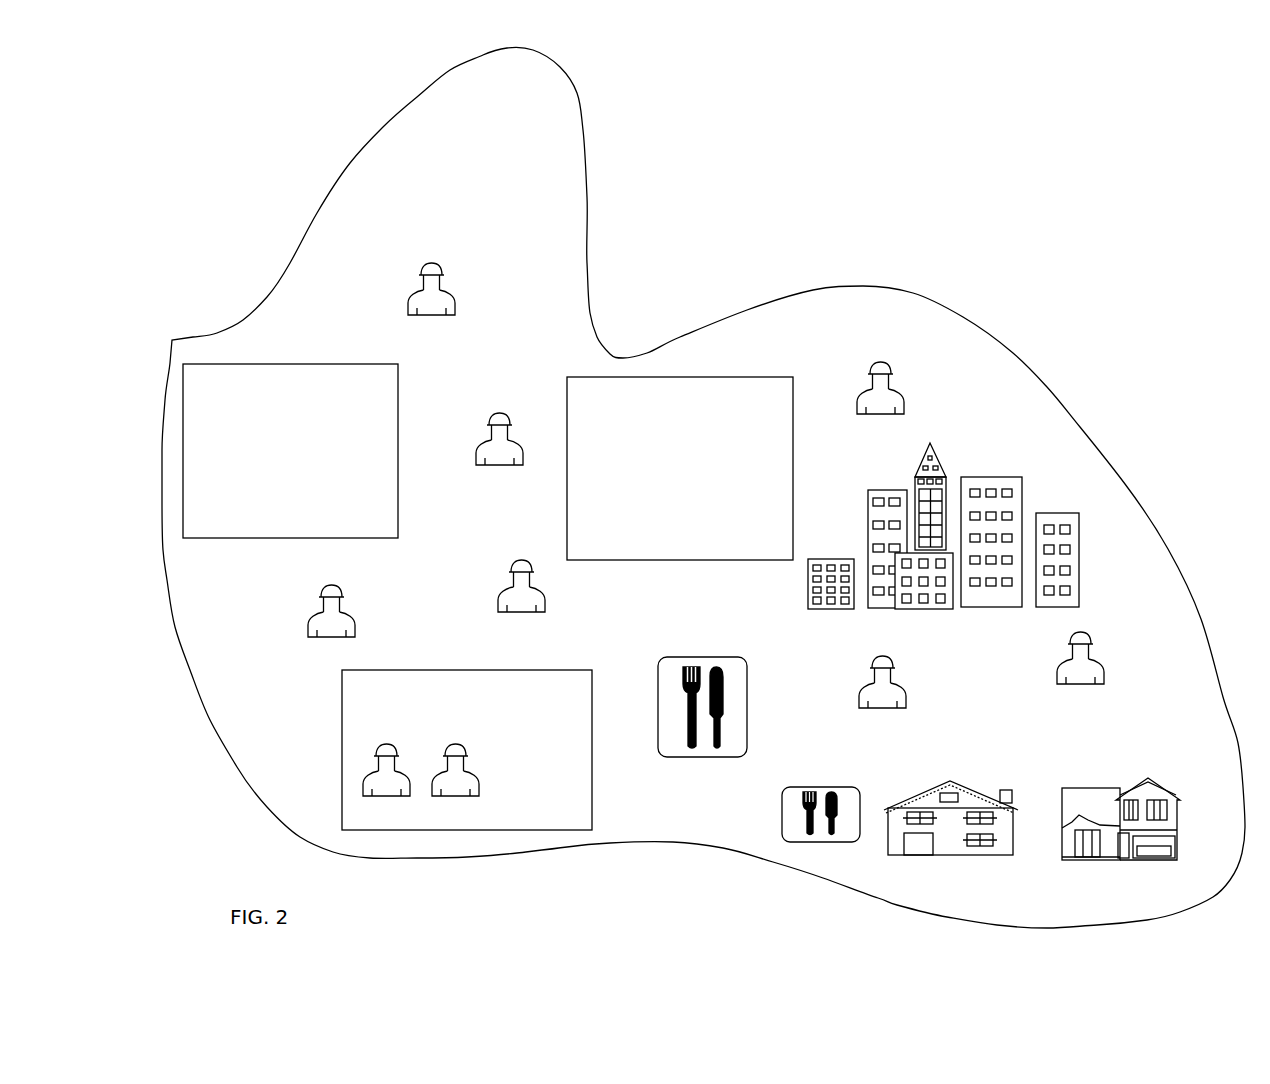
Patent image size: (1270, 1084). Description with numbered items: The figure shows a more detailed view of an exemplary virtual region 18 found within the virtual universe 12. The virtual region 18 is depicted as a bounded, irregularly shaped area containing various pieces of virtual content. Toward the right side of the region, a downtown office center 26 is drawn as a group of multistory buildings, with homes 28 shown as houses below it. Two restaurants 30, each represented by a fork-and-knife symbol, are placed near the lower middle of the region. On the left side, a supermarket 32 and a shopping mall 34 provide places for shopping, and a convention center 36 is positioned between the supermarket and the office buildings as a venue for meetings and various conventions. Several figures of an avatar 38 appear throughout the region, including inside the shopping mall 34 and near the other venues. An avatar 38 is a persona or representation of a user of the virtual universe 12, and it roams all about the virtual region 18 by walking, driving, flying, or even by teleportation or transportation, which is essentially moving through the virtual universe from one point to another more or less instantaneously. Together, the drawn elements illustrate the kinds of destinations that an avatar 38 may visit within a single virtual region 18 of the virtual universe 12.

The virtual universe 12 is at (703, 487).
The virtual region 18 is at (590, 125).
The downtown office center 26 is at (1020, 471).
The homes 28 is at (960, 856).
The restaurants 30 is at (748, 712).
The supermarket 32 is at (290, 364).
The shopping mall 34 is at (342, 752).
The convention center 36 is at (665, 561).
The avatar 38 is at (455, 290).